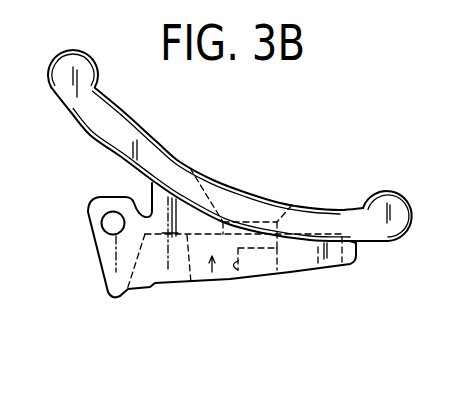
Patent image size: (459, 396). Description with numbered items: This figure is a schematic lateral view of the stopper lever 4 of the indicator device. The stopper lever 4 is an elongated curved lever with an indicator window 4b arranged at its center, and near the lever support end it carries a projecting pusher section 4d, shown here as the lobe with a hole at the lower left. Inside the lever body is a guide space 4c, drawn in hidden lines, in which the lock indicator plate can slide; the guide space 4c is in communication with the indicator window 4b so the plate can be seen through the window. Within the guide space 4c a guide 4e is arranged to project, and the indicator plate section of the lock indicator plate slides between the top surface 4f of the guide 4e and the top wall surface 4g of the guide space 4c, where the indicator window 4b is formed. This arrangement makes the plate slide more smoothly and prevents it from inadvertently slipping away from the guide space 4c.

The stopper lever 4 is at (157, 143).
The indicator window 4b is at (253, 220).
The guide space 4c is at (218, 283).
The projecting pusher section 4d is at (110, 283).
The guide 4e is at (240, 283).
The top surface of the guide 4f is at (277, 243).
The top wall surface of the guide space 4g is at (191, 283).